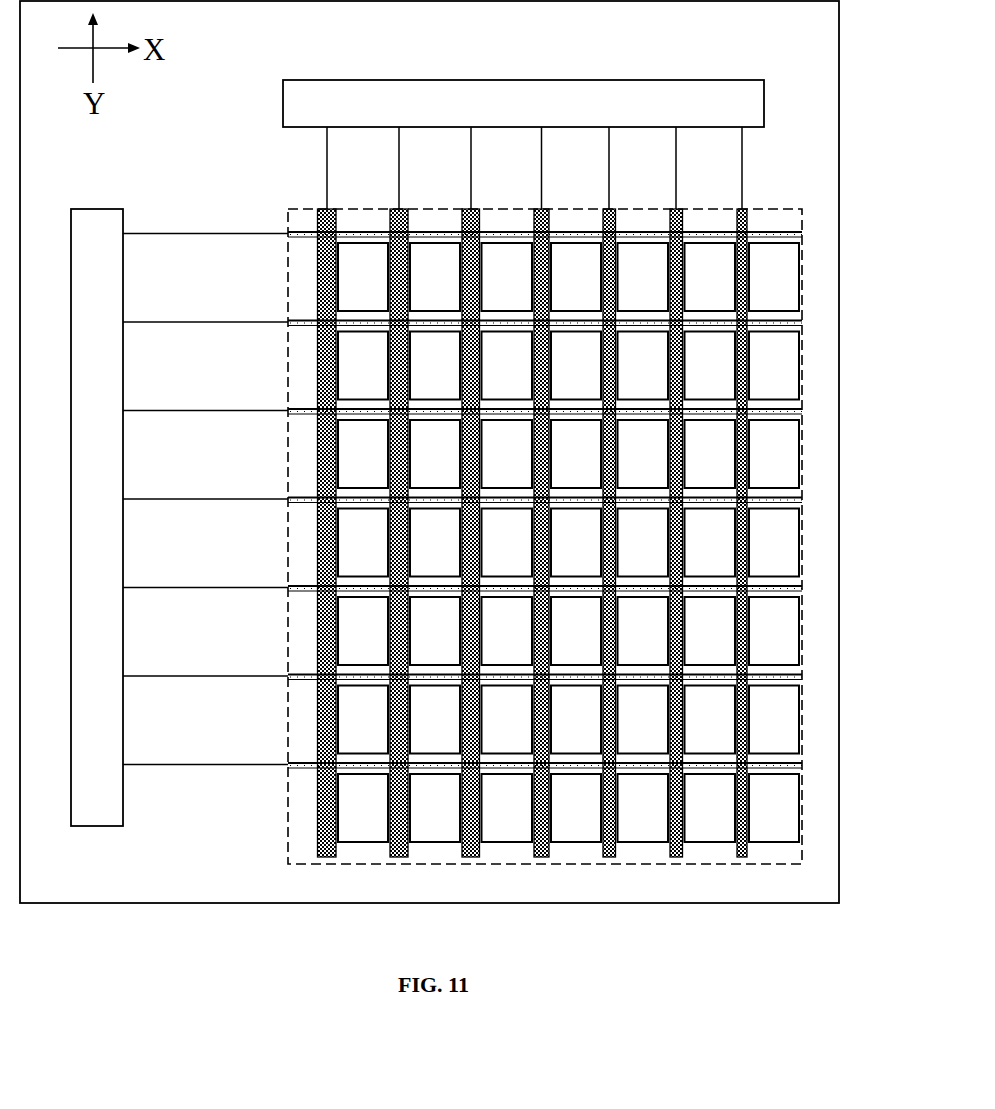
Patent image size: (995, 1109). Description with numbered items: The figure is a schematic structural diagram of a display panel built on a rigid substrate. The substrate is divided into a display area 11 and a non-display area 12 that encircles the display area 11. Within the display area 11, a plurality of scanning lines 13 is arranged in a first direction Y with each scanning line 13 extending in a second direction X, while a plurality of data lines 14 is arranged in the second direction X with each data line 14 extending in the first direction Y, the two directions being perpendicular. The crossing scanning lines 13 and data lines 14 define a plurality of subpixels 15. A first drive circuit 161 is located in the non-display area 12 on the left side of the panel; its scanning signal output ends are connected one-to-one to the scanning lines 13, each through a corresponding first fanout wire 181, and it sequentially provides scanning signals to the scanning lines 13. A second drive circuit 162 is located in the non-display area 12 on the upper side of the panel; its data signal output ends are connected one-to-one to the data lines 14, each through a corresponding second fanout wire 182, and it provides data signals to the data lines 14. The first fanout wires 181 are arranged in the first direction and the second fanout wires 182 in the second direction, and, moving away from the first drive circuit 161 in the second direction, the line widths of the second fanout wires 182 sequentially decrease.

The display area 11 is at (802, 284).
The non-display area 12 is at (824, 147).
The scanning line 13 is at (793, 228).
The data line 14 is at (677, 855).
The subpixel 15 is at (773, 366).
The first drive circuit 161 is at (97, 233).
The second drive circuit 162 is at (628, 80).
The first fanout wire 181 is at (138, 231).
The second fanout wire 182 is at (325, 182).